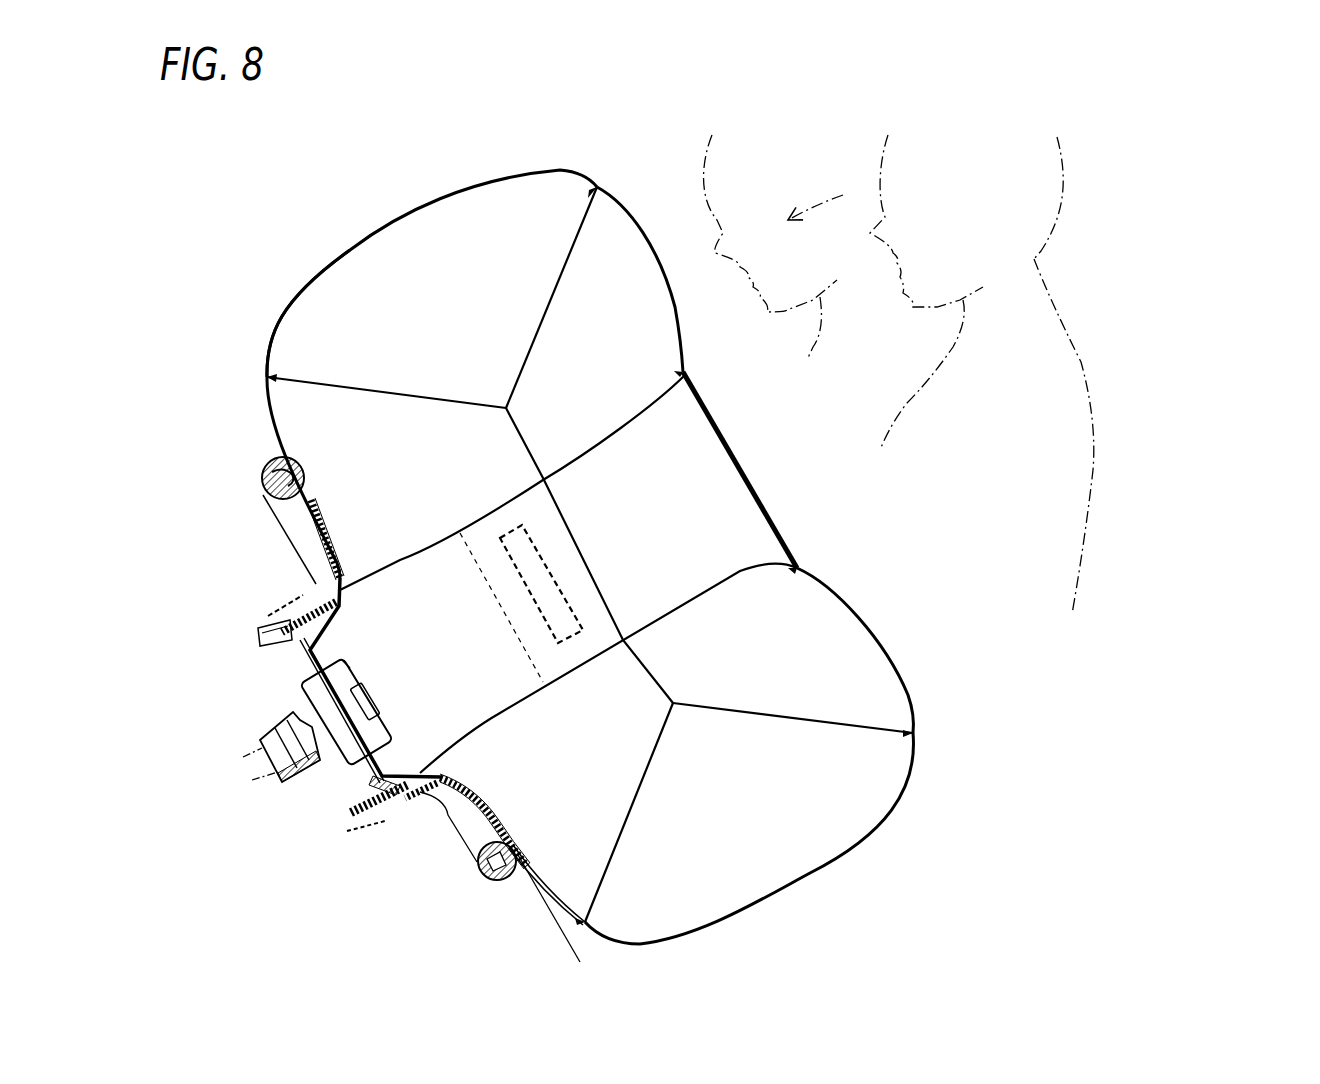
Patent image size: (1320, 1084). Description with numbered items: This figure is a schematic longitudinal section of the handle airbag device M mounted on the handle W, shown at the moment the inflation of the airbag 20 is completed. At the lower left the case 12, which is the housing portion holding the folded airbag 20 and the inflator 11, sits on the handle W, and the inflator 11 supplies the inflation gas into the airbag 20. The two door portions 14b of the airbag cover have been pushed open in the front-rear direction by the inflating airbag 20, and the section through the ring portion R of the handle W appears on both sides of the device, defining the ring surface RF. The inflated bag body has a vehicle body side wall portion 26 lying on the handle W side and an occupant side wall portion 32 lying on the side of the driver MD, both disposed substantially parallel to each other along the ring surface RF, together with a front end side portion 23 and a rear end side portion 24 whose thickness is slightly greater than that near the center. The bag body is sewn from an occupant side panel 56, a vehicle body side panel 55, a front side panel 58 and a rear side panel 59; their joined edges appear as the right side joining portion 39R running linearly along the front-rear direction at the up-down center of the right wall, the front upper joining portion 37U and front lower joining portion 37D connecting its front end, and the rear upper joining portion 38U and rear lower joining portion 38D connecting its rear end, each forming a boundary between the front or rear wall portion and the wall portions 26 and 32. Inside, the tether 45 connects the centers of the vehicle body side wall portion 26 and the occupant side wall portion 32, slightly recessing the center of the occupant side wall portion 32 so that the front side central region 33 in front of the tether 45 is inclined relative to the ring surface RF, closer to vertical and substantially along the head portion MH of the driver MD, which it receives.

The airbag 20 is at (558, 552).
The front end side portion 23 is at (272, 293).
The rear end side portion 24 is at (725, 925).
The vehicle body side wall portion 26 is at (523, 875).
The occupant side wall portion 32 is at (815, 578).
The front side central region 33 is at (655, 252).
The front upper joining portion 37U is at (533, 312).
The front lower joining portion 37D is at (372, 382).
The rear upper joining portion 38U is at (810, 725).
The rear lower joining portion 38D is at (632, 808).
The right side joining portion 39R is at (660, 659).
The tether 45 is at (590, 437).
The vehicle body side panel 55 is at (270, 428).
The occupant side panel 56 is at (682, 343).
The front side panel 58 is at (345, 256).
The rear side panel 59 is at (812, 873).
The inflator 11 is at (342, 770).
The case 12 is at (300, 651).
The door portion 14b is at (323, 510).
The ring portion R is at (267, 475).
The handle W is at (267, 533).
The handle airbag device M is at (227, 823).
The head portion MH is at (1057, 194).
The driver MD is at (1114, 370).
The ring surface RF is at (548, 910).